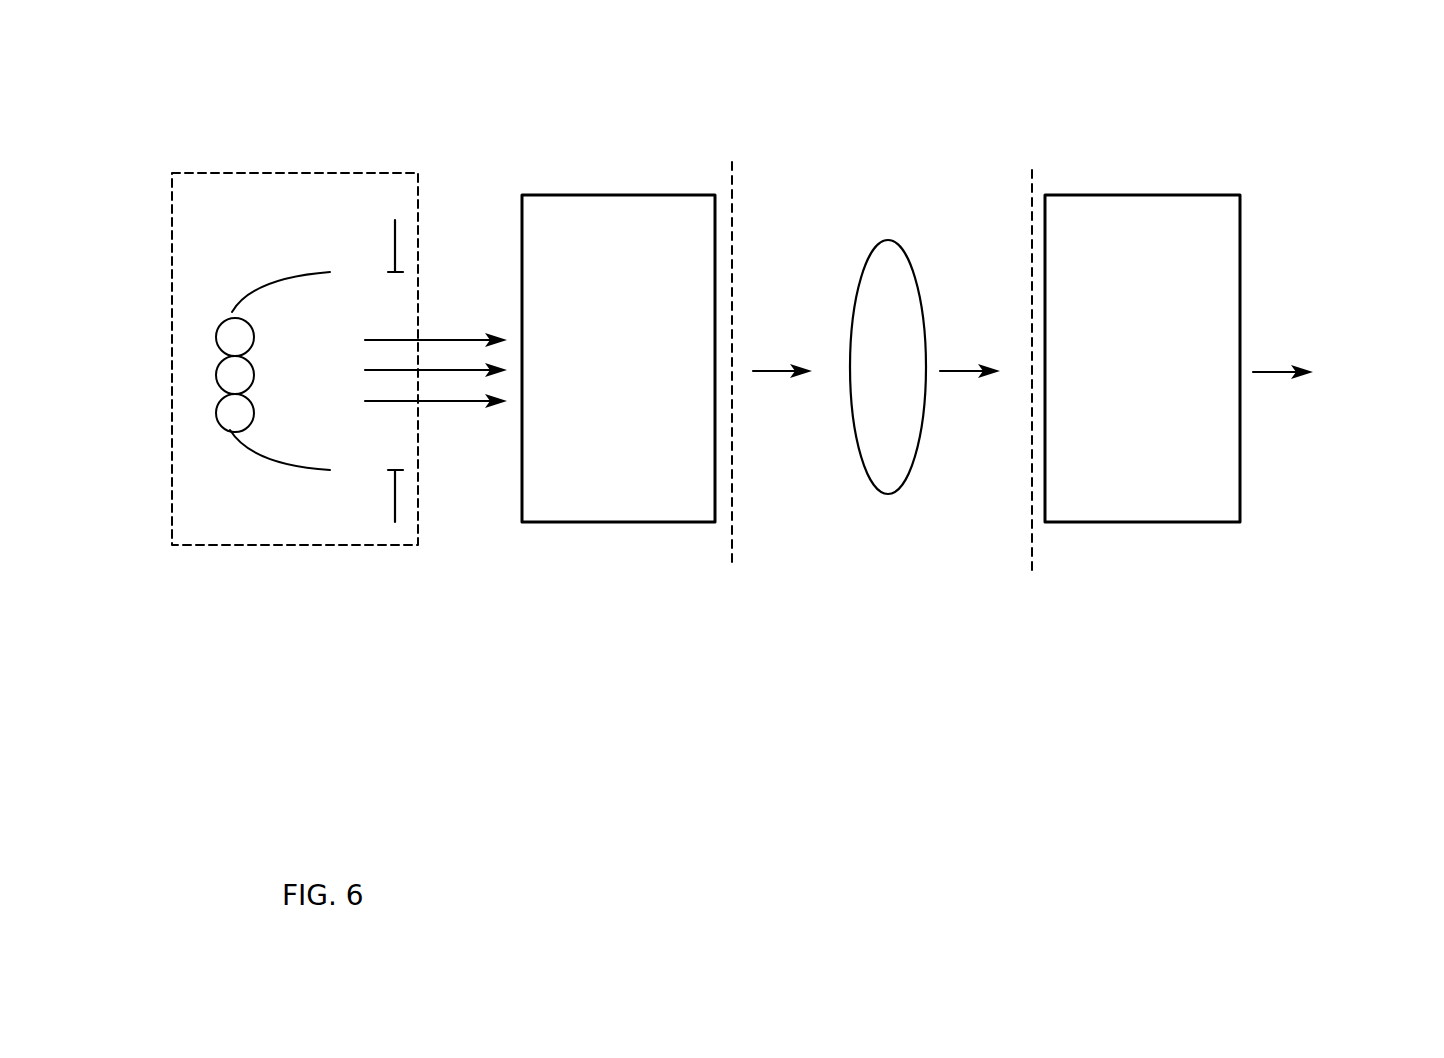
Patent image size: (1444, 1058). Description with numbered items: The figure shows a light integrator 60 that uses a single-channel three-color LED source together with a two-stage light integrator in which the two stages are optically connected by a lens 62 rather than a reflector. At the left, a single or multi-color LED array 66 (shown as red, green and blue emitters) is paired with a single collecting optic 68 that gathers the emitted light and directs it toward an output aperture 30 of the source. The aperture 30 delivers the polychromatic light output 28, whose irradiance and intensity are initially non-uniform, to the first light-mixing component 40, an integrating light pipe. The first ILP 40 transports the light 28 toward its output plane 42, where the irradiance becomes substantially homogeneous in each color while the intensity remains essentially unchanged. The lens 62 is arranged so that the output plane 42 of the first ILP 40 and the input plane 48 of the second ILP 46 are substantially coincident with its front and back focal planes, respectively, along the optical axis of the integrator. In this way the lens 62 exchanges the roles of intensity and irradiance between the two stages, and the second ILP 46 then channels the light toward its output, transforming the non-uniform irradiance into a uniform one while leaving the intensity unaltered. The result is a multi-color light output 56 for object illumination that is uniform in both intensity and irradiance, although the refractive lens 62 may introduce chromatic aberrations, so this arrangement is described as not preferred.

The light output 28 is at (455, 378).
The output aperture 30 is at (395, 242).
The first light-mixing component 40 is at (583, 242).
The output plane 42 is at (732, 162).
The second ILP 46 is at (1212, 220).
The input plane 48 is at (1032, 170).
The multi-color light output 56 is at (1280, 377).
The light integrator 60 is at (798, 700).
The lens 62 is at (903, 272).
The LED array 66 is at (170, 302).
The collecting optic 68 is at (300, 470).